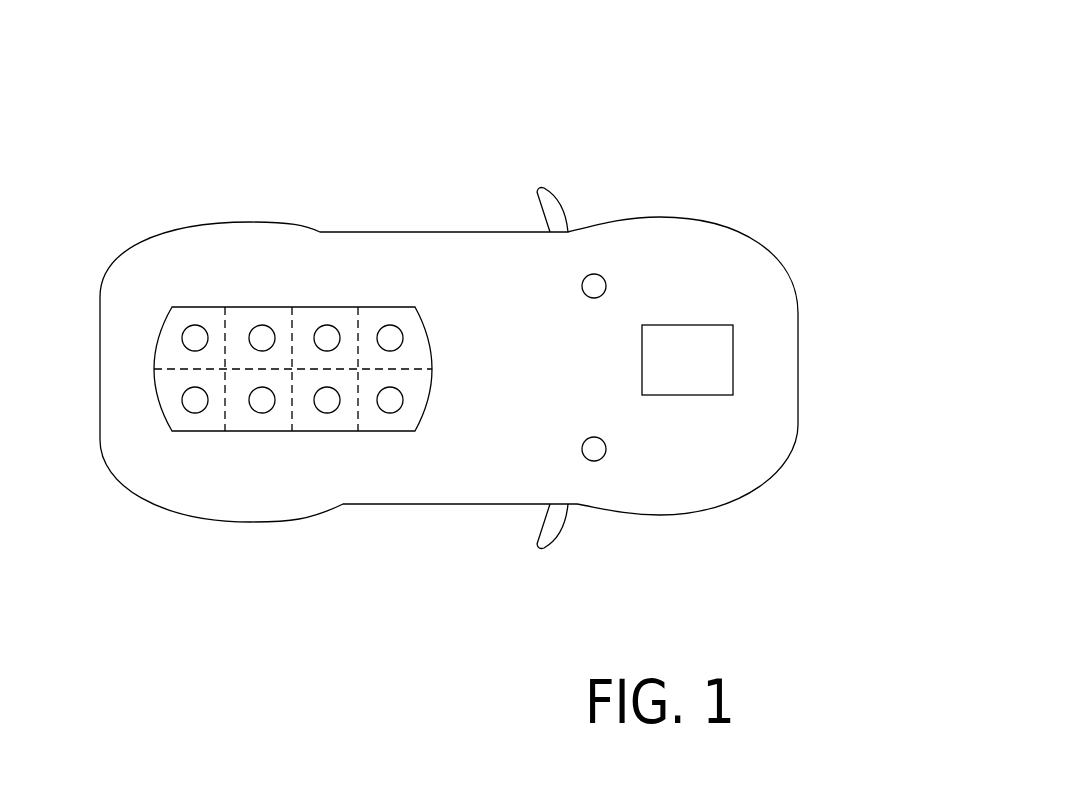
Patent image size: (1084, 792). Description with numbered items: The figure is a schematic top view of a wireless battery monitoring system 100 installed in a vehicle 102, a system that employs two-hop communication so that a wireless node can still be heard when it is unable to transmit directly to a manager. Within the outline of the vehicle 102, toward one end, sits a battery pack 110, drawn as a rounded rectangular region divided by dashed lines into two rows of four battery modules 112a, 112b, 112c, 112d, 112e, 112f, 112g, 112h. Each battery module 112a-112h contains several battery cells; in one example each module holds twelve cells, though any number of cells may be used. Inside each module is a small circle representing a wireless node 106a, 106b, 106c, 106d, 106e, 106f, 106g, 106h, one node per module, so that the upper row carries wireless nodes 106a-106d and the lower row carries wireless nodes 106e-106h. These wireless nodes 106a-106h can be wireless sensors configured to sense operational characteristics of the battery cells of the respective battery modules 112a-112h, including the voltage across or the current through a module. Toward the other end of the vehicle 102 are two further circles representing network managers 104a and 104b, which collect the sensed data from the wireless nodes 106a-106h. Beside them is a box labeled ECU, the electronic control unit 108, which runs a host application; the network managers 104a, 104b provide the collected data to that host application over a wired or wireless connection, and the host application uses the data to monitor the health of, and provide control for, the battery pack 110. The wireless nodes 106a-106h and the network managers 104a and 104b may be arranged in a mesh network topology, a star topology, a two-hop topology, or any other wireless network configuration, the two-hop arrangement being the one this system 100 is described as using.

The system 100 is at (652, 40).
The vehicle 102 is at (385, 232).
The network manager 104a is at (606, 288).
The network manager 104b is at (606, 449).
The wireless node 106a is at (191, 325).
The wireless node 106b is at (262, 325).
The wireless node 106c is at (329, 325).
The wireless node 106d is at (397, 328).
The wireless node 106e is at (191, 413).
The wireless node 106f is at (262, 413).
The wireless node 106g is at (329, 413).
The wireless node 106h is at (396, 412).
The electronic control unit (ECU) 108 is at (678, 325).
The battery pack 110 is at (432, 353).
The battery module 112a is at (163, 352).
The battery module 112b is at (240, 323).
The battery module 112c is at (343, 325).
The battery module 112d is at (414, 342).
The battery module 112e is at (164, 393).
The battery module 112f is at (236, 423).
The battery module 112g is at (344, 415).
The battery module 112h is at (416, 396).